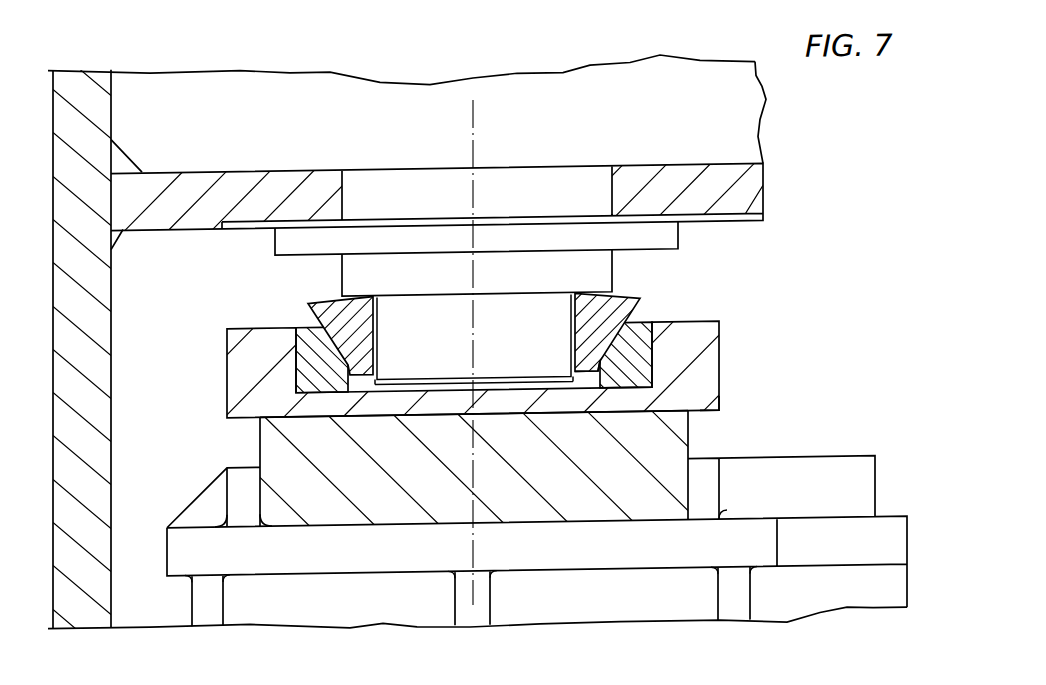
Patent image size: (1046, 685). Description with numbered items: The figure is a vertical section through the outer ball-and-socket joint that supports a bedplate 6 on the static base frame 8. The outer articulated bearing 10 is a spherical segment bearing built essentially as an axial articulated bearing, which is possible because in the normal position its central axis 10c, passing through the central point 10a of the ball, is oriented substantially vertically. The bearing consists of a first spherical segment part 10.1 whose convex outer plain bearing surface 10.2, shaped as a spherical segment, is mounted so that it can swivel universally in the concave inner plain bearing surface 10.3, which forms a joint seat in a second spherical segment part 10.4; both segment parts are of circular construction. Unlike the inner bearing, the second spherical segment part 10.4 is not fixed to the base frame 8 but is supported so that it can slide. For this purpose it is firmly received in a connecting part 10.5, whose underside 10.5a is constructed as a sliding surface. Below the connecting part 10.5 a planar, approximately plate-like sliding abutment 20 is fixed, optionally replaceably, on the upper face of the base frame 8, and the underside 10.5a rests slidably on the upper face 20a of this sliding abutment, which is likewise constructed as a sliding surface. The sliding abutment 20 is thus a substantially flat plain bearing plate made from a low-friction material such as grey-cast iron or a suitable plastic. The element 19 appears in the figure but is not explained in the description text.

The bedplate 6 is at (767, 181).
The outer articulated bearing 10 is at (747, 261).
The central point of the ball 10a is at (473, 218).
The first spherical segment part 10.1 is at (615, 305).
The convex outer plain bearing surface 10.2 is at (642, 314).
The concave inner plain bearing surface 10.3 is at (600, 349).
The second spherical segment part 10.4 is at (656, 353).
The connecting part 10.5 is at (707, 382).
The underside of the connecting part 10.5a is at (713, 416).
The central axis of the outer articulated bearing 10c is at (478, 358).
The punch 19 is at (398, 302).
The sliding abutment 20 is at (277, 447).
The upper face of the sliding abutment 20a is at (281, 414).
The base frame 8 is at (735, 544).